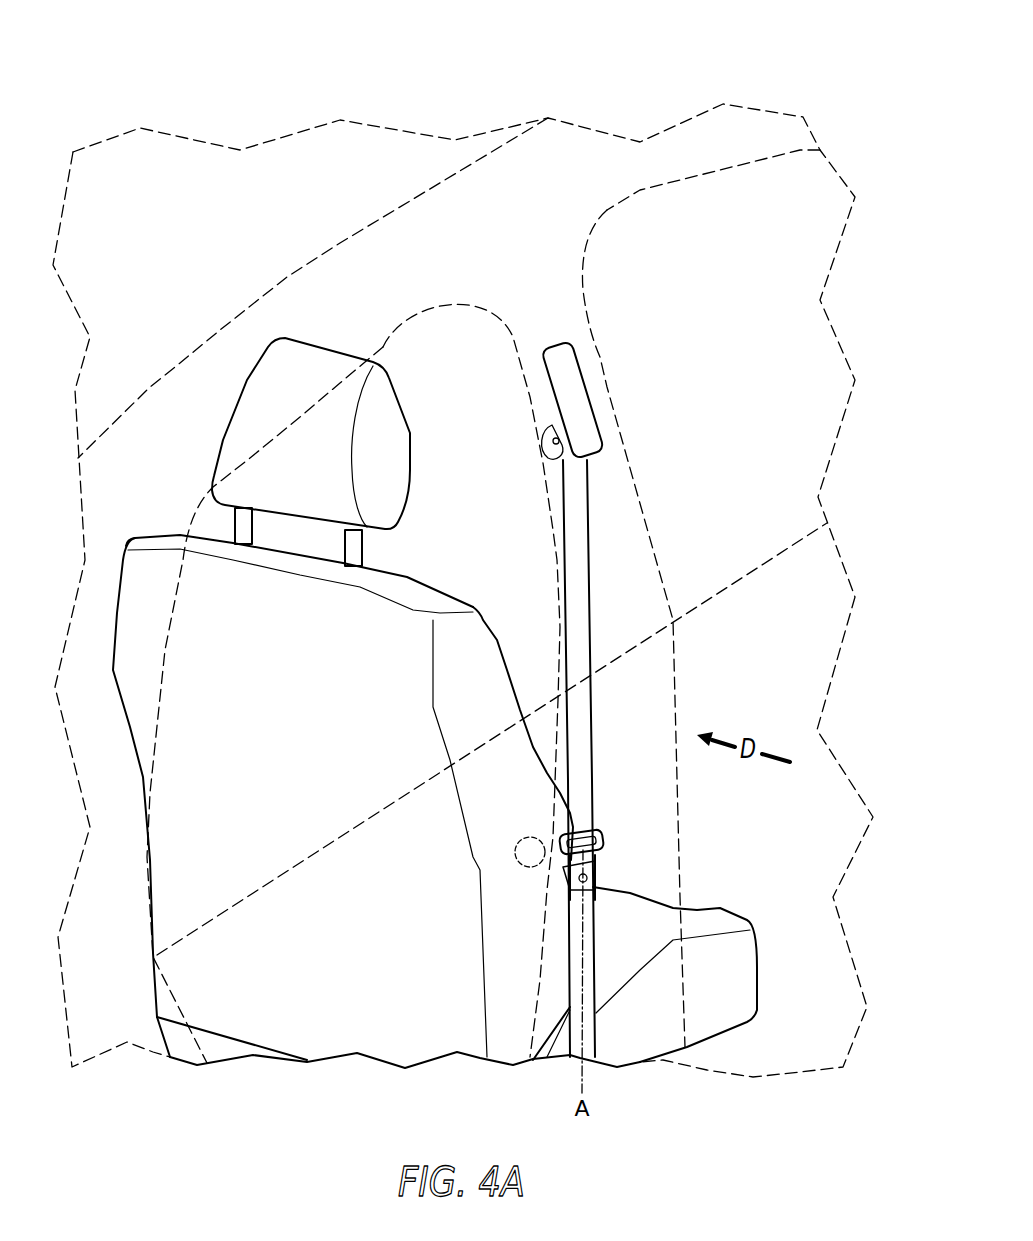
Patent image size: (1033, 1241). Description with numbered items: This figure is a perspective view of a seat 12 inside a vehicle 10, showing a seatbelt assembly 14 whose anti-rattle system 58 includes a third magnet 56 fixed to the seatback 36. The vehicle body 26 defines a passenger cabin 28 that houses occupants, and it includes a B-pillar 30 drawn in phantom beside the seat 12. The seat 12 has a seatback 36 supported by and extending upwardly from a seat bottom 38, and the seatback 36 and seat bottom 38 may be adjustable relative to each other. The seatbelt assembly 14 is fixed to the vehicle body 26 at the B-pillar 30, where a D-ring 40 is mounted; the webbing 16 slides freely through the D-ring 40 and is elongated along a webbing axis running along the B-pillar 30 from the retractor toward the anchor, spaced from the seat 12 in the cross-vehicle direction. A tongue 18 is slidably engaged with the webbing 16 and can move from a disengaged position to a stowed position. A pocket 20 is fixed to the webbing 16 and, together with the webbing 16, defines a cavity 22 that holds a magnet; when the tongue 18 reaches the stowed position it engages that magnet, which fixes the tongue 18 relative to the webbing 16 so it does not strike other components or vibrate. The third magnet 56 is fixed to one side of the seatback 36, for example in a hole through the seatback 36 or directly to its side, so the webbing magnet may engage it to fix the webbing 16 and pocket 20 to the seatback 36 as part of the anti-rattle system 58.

The vehicle 10 is at (686, 68).
The seat 12 is at (480, 602).
The seatbelt assembly 14 is at (642, 384).
The webbing 16 is at (590, 623).
The tongue 18 is at (600, 833).
The pocket 20 is at (566, 868).
The cavity 22 is at (589, 877).
The vehicle body 26 is at (287, 277).
The passenger cabin 28 is at (802, 215).
The B-pillar 30 is at (598, 331).
The seatback 36 is at (407, 575).
The seat bottom 38 is at (720, 908).
The D-ring 40 is at (543, 447).
The third magnet 56 is at (517, 840).
The anti-rattle system 58 is at (561, 889).